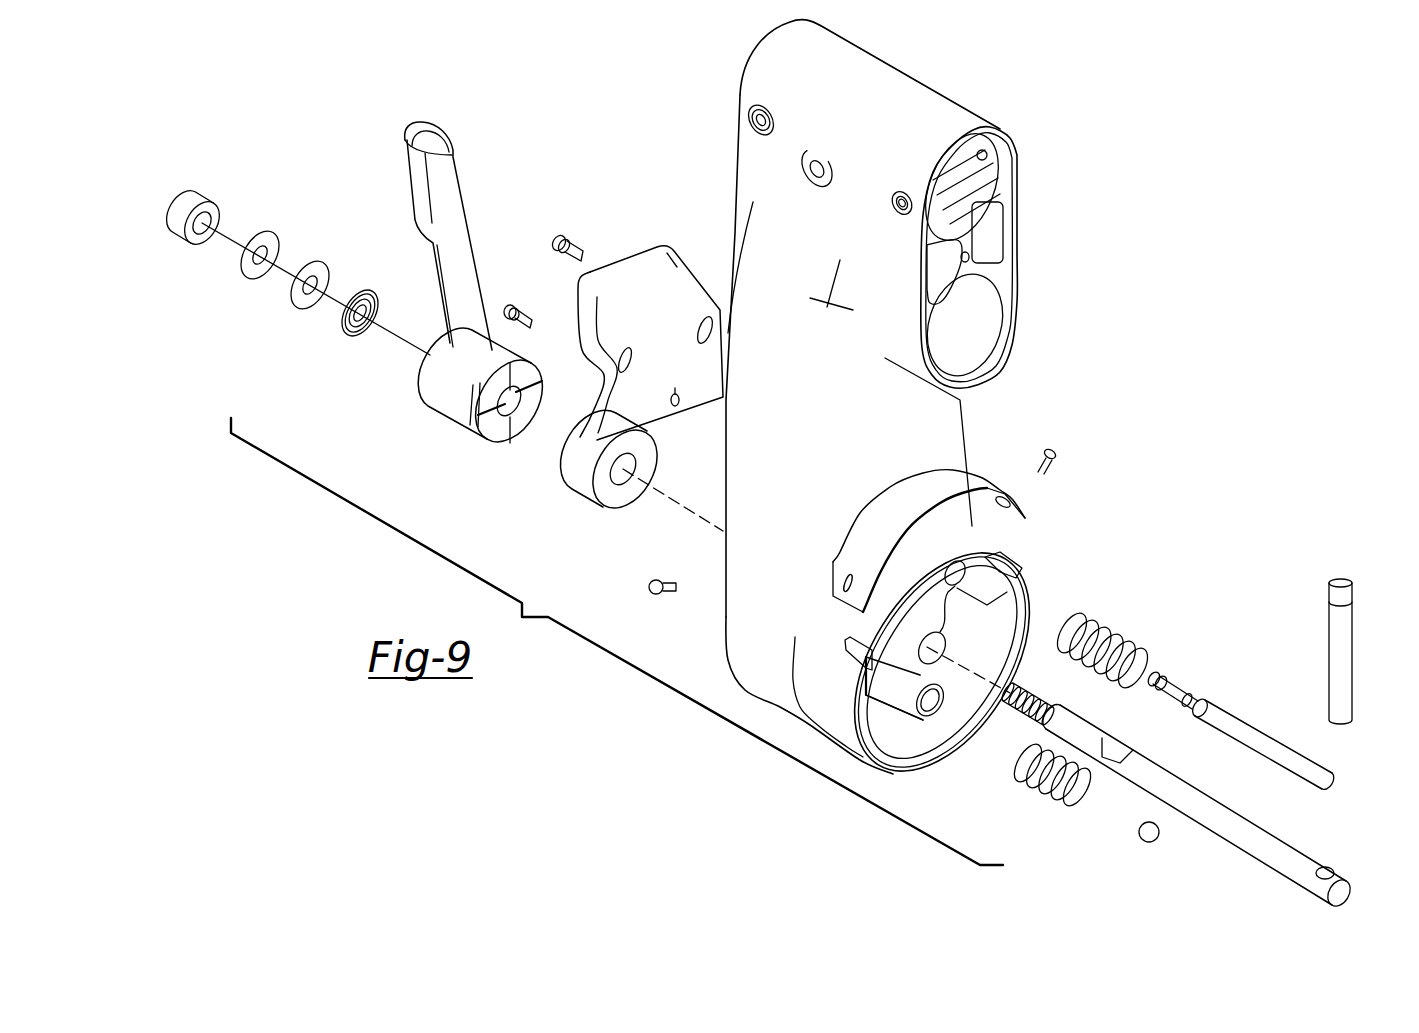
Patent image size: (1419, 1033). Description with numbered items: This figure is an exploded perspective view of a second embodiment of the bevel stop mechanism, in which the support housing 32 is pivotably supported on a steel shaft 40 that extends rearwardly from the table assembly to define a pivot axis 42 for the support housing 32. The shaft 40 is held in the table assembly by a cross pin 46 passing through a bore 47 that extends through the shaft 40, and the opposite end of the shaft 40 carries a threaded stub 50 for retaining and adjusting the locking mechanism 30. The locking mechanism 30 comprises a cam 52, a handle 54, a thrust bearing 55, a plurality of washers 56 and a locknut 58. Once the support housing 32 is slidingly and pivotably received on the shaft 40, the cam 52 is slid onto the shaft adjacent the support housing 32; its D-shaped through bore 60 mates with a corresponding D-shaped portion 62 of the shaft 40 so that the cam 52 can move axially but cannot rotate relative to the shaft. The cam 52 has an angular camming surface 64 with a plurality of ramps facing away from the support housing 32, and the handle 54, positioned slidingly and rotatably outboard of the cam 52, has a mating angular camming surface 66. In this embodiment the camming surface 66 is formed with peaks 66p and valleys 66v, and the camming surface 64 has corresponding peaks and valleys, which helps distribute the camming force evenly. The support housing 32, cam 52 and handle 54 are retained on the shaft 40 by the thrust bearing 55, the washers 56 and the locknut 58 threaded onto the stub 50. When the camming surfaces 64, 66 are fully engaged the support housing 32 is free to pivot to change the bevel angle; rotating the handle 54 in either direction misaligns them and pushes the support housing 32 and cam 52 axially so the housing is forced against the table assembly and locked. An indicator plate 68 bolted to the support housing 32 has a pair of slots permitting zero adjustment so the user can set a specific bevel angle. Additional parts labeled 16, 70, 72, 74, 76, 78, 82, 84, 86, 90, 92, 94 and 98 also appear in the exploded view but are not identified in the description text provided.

The housing 16 is at (1038, 112).
The locking mechanism 30 is at (410, 265).
The support housing 32 is at (963, 410).
The shaft 40 is at (1201, 798).
The pivot axis 42 is at (704, 520).
The cross pin 46 is at (1343, 676).
The bore 47 is at (1325, 870).
The threaded stub 50 is at (1037, 698).
The cam 52 is at (579, 484).
The handle 54 is at (447, 182).
The thrust bearing 55 is at (345, 332).
The washers 56 is at (293, 297).
The locknut 58 is at (177, 208).
The D-shaped through bore 60 is at (623, 469).
The D-shaped portion 62 is at (1103, 740).
The angular camming surface 64 is at (594, 487).
The angular camming surface 66 is at (489, 448).
The valleys 66v is at (530, 377).
The peaks 66p is at (520, 315).
The indicator plate 68 is at (950, 484).
The detent assembly 70 is at (1102, 828).
The rod assembly 72 is at (1179, 594).
The spring 74 is at (1020, 763).
The ball 76 is at (1150, 842).
The hole 78 is at (943, 705).
The spring 82 is at (1105, 616).
The plunger 84 is at (1309, 764).
The bracket 86 is at (668, 264).
The notch 90 is at (988, 561).
The pin 92 is at (1177, 690).
The pin 94 is at (680, 407).
The pin 98 is at (560, 236).